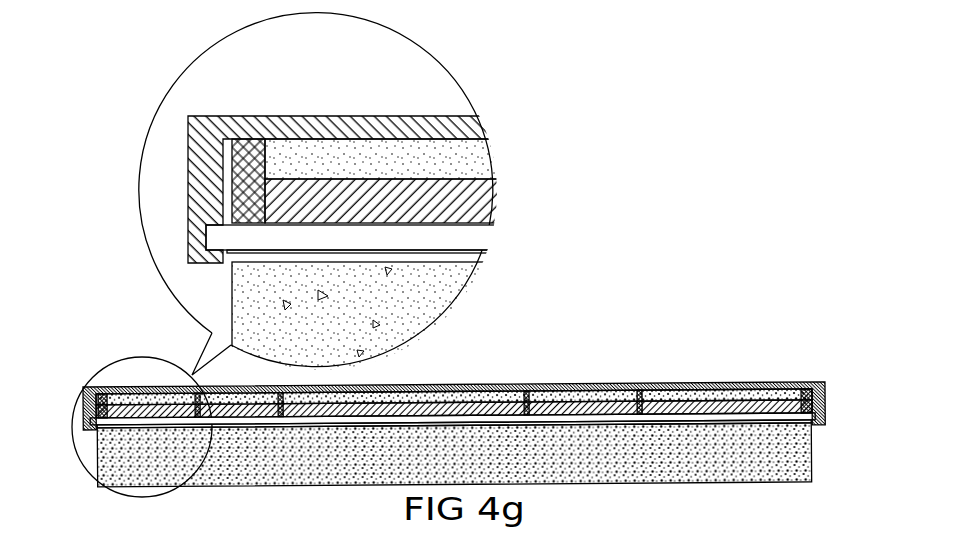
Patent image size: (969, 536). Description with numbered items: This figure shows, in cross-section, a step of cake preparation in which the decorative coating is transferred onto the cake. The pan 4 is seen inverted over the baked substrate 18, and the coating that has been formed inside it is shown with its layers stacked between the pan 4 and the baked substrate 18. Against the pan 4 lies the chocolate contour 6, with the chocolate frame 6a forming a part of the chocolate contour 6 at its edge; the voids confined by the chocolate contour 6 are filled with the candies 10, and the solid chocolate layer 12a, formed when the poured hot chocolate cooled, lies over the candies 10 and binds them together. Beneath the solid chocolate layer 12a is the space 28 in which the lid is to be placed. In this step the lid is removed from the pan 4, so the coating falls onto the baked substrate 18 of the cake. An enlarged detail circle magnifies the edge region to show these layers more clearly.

The pan 4 is at (483, 132).
The chocolate contour 6 is at (645, 389).
The chocolate frame 6a is at (244, 148).
The candies 10 is at (478, 167).
The solid chocolate layer 12a is at (472, 200).
The space 28 is at (475, 240).
The baked substrate 18 is at (440, 282).